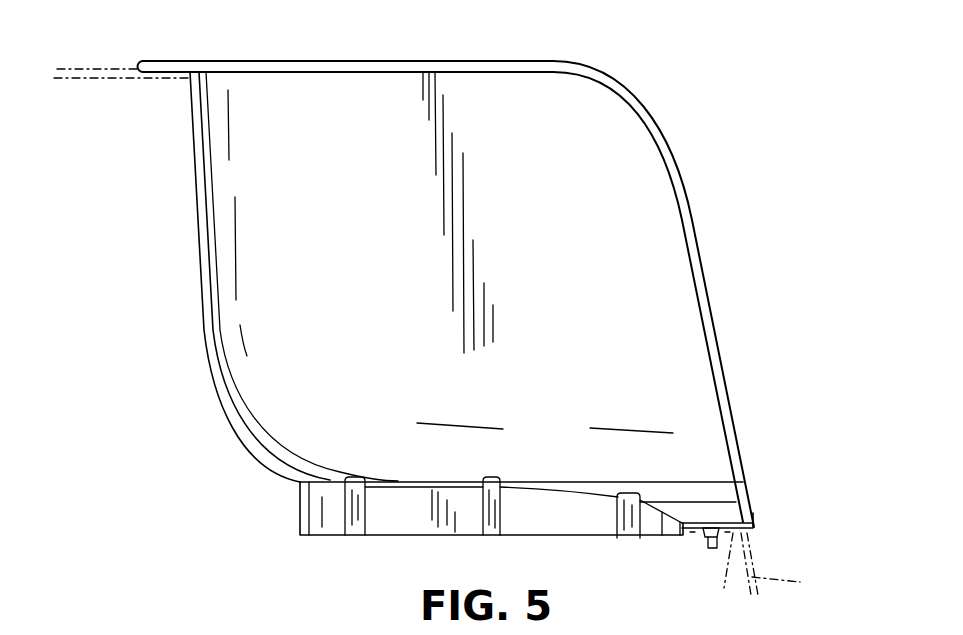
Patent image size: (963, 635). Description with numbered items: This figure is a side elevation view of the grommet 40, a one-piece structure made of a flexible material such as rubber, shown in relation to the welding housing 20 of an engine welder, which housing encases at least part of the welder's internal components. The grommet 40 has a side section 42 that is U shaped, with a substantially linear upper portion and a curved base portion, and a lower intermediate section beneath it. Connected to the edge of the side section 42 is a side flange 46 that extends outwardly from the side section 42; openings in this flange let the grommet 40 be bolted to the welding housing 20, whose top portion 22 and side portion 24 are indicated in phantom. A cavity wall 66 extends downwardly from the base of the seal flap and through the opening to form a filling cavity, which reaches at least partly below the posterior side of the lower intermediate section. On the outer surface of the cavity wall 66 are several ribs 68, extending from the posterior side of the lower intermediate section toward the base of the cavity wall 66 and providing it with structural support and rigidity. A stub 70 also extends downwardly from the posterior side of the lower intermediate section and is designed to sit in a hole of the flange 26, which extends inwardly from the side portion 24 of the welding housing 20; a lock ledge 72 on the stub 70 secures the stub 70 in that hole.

The welding housing 20 is at (110, 62).
The top portion 22 is at (72, 67).
The side portion 24 is at (793, 583).
The flange 26 is at (724, 575).
The grommet 40 is at (621, 82).
The side section 42 is at (195, 218).
The side flange 46 is at (322, 63).
The cavity wall 66 is at (397, 518).
The ribs 68 is at (352, 502).
The stub 70 is at (708, 533).
The lock ledge 72 is at (713, 528).